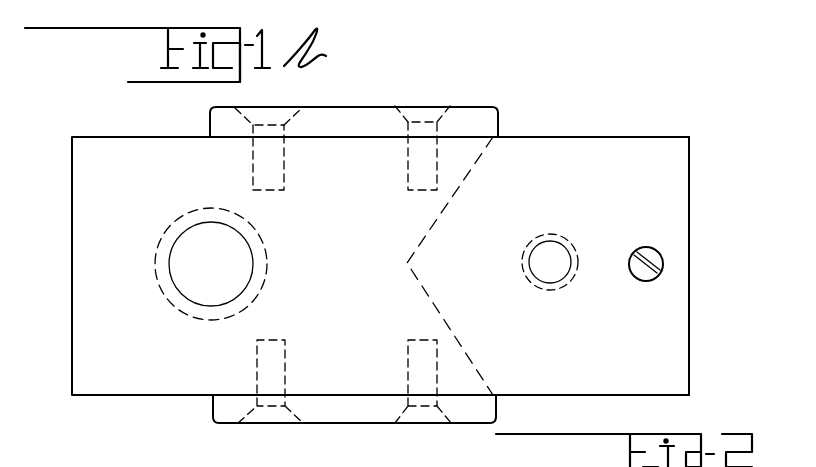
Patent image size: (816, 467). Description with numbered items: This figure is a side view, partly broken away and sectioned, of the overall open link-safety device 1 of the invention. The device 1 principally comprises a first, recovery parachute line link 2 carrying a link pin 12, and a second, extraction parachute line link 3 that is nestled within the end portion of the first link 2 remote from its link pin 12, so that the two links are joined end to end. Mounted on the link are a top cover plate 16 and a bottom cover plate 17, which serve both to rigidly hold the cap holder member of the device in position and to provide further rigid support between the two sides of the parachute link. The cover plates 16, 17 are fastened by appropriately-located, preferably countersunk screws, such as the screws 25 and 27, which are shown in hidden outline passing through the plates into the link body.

The open link-safety device 1 is at (130, 398).
The recovery parachute line link 2 is at (136, 148).
The extraction parachute line link 3 is at (672, 181).
The link pin 12 is at (258, 250).
The top cover plate 16 is at (363, 113).
The bottom cover plate 17 is at (356, 418).
The countersunk screw 25 is at (275, 120).
The countersunk screw 27 is at (273, 413).